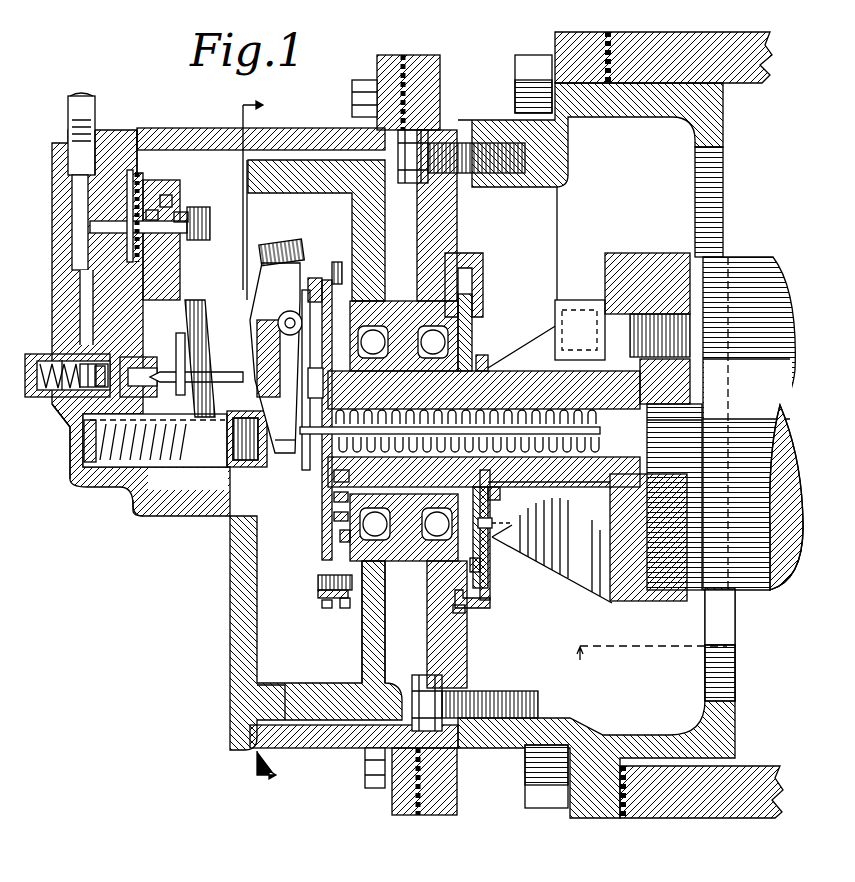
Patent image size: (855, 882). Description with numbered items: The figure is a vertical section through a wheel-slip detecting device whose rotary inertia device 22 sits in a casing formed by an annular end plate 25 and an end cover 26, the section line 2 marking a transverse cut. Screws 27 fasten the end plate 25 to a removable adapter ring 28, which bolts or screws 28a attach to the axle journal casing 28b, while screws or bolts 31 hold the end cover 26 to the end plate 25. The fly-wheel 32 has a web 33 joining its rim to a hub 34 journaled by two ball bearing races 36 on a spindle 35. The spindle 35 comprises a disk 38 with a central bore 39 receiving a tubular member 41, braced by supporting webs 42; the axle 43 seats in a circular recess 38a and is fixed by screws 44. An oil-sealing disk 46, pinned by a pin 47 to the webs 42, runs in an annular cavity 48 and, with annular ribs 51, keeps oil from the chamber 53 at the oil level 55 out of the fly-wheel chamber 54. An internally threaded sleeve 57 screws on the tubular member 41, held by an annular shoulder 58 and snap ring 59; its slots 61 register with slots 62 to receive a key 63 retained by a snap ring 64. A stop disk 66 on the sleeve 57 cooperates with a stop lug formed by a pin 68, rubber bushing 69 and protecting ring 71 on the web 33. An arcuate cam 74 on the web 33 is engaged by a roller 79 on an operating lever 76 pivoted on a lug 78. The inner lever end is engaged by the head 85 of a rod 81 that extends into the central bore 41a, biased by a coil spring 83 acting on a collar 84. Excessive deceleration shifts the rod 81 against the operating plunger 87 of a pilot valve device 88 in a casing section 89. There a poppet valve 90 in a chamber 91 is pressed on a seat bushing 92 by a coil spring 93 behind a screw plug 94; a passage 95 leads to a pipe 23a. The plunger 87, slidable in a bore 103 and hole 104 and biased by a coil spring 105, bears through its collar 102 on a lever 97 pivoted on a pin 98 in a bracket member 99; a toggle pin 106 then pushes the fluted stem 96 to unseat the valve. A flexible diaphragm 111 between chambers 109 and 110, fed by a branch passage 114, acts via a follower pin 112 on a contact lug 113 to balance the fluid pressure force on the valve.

The section line 2- 2 is at (249, 443).
The rotary inertia device 22 is at (416, 46).
The pipe 23a is at (70, 97).
The annular end plate 25 is at (458, 213).
The end cover 26 is at (300, 158).
The screws 27 is at (383, 175).
The adapter ring 28 is at (475, 122).
The bolts or screws 28a is at (515, 72).
The axle journal casing 28b is at (685, 38).
The screws or bolts 31 is at (352, 98).
The fly-wheel 32 is at (250, 689).
The web 33 is at (365, 638).
The hub 34 is at (490, 585).
The spindle 35 is at (525, 372).
The ball bearing races 36 is at (318, 580).
The securing flange or disk 38 is at (620, 258).
The circular recess 38a is at (692, 592).
The central bore or hole 39 is at (645, 395).
The tubular member 41 is at (622, 463).
The central bore 41a is at (640, 440).
The supporting webs 42 is at (542, 367).
The axle 43 is at (750, 262).
The screws 44 is at (600, 313).
The oil-sealing disk 46 is at (476, 262).
The pin 47 is at (490, 530).
The annular cavity 48 is at (478, 610).
The annular ribs 51 is at (488, 605).
The chamber 53 is at (736, 736).
The chamber 54 is at (205, 130).
The oil level 55 is at (543, 646).
The internally threaded sleeve 57 is at (500, 493).
The annular shoulder 58 is at (365, 526).
The snap ring 59 is at (482, 357).
The slots 61 is at (334, 498).
The slots 62 is at (334, 476).
The key 63 is at (340, 536).
The snap ring 64 is at (334, 517).
The stop disk 66 is at (335, 280).
The pin 68 is at (320, 594).
The rubber bushing 69 is at (322, 606).
The protecting sheet metal ring 71 is at (342, 608).
The arcuate cam 74 is at (300, 365).
The operating lever 76 is at (296, 285).
The lug 78 is at (319, 371).
The roller 79 is at (290, 245).
The rod 81 is at (592, 424).
The coil spring 83 is at (549, 494).
The collar 84 is at (546, 540).
The head 85 is at (284, 458).
The operating plunger 87 is at (113, 427).
The pilot valve device 88 is at (52, 172).
The casing section 89 is at (118, 140).
The poppet valve 90 is at (68, 430).
The chamber 91 is at (62, 360).
The seat bushing 92 is at (95, 368).
The coil spring 93 is at (52, 406).
The screw plug 94 is at (40, 358).
The passage 95 is at (82, 276).
The fluted stem 96 is at (130, 362).
The lever 97 is at (206, 308).
The pin 98 is at (205, 282).
The bracket member 99 is at (178, 345).
The collar 102 is at (143, 457).
The bore 103 is at (108, 482).
The hole 104 is at (155, 452).
The coil spring 105 is at (100, 452).
The toggle pin 106 is at (205, 370).
The chamber 109 is at (160, 212).
The chamber 110 is at (150, 205).
The flexible diaphragm 111 is at (175, 205).
The follower pin 112 is at (195, 215).
The contact lug 113 is at (210, 222).
The branch passage 114 is at (90, 227).